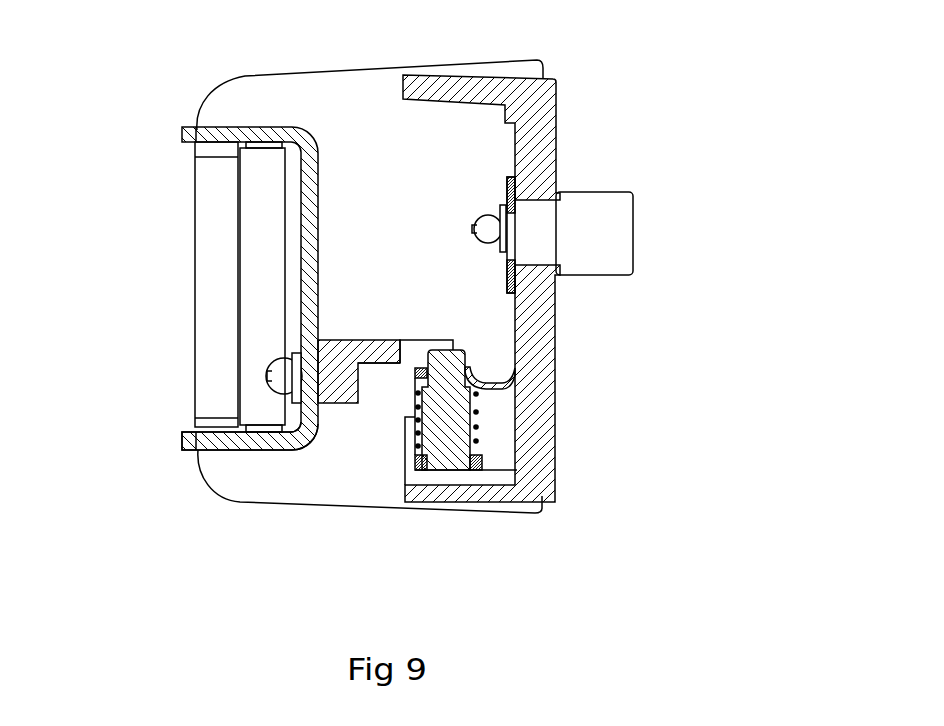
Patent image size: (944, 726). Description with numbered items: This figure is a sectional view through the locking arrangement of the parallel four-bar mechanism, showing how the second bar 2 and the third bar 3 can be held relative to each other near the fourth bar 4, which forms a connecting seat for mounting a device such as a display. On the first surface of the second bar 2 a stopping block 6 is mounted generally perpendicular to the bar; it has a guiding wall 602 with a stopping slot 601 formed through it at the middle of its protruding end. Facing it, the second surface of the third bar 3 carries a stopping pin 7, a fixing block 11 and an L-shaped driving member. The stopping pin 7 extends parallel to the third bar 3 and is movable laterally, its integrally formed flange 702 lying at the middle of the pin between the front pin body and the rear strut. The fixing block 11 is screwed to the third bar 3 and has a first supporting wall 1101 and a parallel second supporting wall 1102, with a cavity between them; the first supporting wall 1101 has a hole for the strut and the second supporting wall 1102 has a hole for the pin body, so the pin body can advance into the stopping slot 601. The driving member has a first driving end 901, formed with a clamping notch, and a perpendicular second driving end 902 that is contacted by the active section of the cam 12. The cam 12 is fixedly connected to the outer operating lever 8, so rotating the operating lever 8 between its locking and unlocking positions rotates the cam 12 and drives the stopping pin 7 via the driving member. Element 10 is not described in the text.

The second bar 2 is at (182, 133).
The third bar 3 is at (530, 112).
The fourth bar 4 is at (223, 465).
The stopping block 6 is at (352, 341).
The stopping pin 7 is at (445, 351).
The operating lever 8 is at (612, 220).
The spring 10 is at (522, 428).
The fixing block 11 is at (497, 463).
The cam 12 is at (506, 180).
The stopping slot 601 is at (408, 340).
The guiding wall 602 is at (387, 364).
The flange 702 is at (523, 388).
The first driving end 901 is at (522, 363).
The second driving end 902 is at (518, 290).
The first supporting wall 1101 is at (480, 472).
The second supporting wall 1102 is at (413, 380).